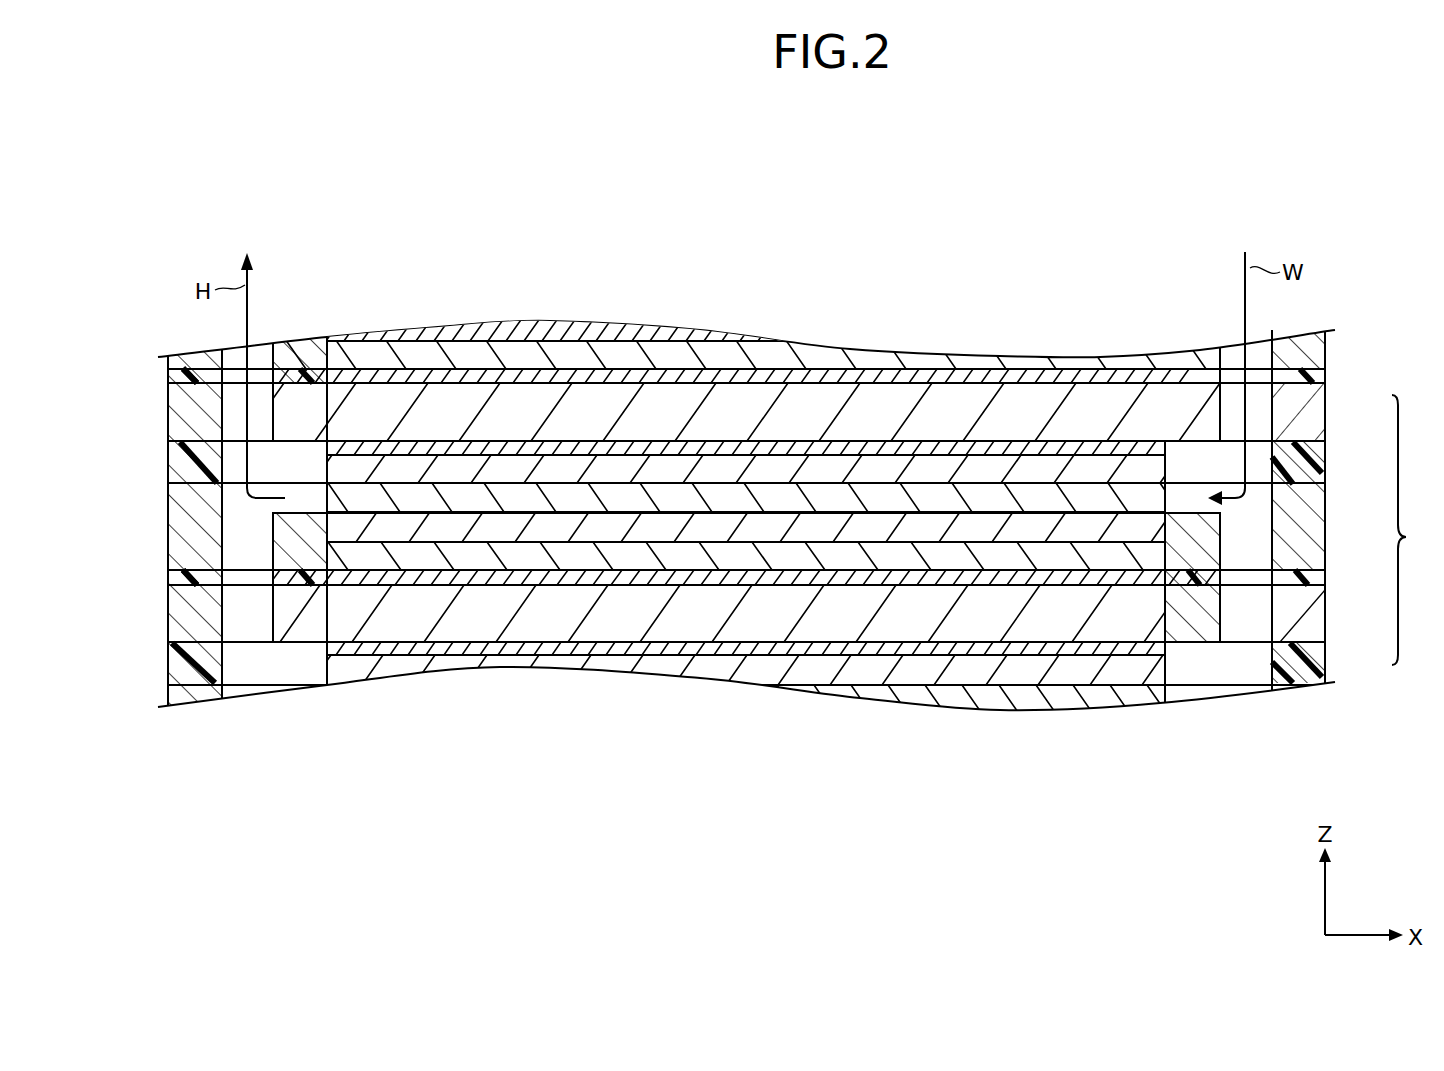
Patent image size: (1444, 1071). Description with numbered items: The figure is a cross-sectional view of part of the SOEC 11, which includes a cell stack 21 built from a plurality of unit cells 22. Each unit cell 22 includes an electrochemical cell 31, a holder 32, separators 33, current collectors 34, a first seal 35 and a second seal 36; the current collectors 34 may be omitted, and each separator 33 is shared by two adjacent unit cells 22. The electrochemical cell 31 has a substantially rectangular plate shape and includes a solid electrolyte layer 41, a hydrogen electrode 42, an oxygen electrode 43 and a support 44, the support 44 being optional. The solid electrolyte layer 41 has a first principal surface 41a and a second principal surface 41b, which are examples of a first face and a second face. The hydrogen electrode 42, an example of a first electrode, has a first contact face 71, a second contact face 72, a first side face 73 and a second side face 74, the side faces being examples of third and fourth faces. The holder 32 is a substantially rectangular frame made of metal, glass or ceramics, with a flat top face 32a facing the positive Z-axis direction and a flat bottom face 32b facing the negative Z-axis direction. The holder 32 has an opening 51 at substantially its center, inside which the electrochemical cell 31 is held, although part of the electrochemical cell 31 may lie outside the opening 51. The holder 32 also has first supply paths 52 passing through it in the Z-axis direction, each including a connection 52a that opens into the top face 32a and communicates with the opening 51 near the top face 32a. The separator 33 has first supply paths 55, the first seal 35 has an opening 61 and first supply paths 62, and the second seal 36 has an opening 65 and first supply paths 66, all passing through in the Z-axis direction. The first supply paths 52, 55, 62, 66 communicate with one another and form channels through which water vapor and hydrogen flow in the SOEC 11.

The SOEC 11 is at (176, 158).
The cell stack 21 is at (184, 344).
The unit cell 22 is at (1318, 327).
The electrochemical cell 31 is at (1176, 528).
The holder 32 is at (1310, 548).
The top face 32a is at (225, 480).
The bottom face 32b is at (230, 580).
The separator 33 is at (1310, 352).
The current collector 34 is at (1167, 443).
The first seal 35 is at (1322, 468).
The second seal 36 is at (1312, 376).
The solid electrolyte layer 41 is at (567, 532).
The first principal surface 41a is at (622, 512).
The second principal surface 41b is at (628, 543).
The hydrogen electrode 42 is at (700, 497).
The oxygen electrode 43 is at (698, 560).
The support 44 is at (823, 470).
The opening 51 is at (352, 560).
The first supply path 52 is at (230, 545).
The connection 52a is at (307, 500).
The first supply path 55 is at (230, 413).
The opening 61 is at (340, 498).
The first supply path 62 is at (230, 460).
The opening 65 is at (328, 556).
The first supply path 66 is at (230, 620).
The first contact face 71 is at (772, 537).
The second contact face 72 is at (772, 572).
The first side face 73 is at (1178, 495).
The second side face 74 is at (327, 505).